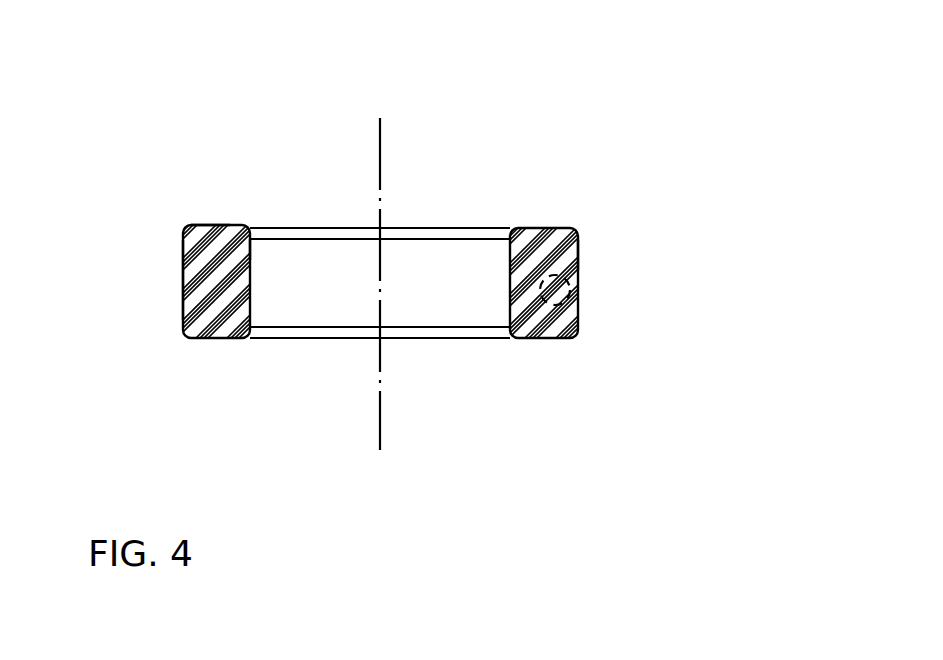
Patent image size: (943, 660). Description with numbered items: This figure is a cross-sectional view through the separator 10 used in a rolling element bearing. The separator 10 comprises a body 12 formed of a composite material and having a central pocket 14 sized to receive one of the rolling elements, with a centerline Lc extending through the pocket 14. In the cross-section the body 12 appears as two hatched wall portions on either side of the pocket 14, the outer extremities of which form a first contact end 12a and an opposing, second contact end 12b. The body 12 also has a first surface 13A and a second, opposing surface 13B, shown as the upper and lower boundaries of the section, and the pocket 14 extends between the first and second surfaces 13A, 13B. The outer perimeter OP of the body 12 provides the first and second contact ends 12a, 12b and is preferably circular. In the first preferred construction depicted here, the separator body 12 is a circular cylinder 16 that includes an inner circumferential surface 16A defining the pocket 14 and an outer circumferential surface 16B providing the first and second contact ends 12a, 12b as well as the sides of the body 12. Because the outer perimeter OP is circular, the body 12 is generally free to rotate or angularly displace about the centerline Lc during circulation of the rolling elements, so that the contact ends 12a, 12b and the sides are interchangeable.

The separator 10 is at (133, 148).
The body 12 is at (208, 368).
The first contact end 12a is at (183, 258).
The second contact end 12b is at (578, 302).
The first surface 13A is at (545, 342).
The second surface 13B is at (537, 228).
The central pocket 14 is at (321, 315).
The circular cylinder 16 is at (218, 222).
The inner circumferential surface 16A is at (250, 275).
The outer circumferential surface 16B is at (578, 277).
The outer perimeter OP is at (170, 314).
The centerline Lc is at (381, 152).